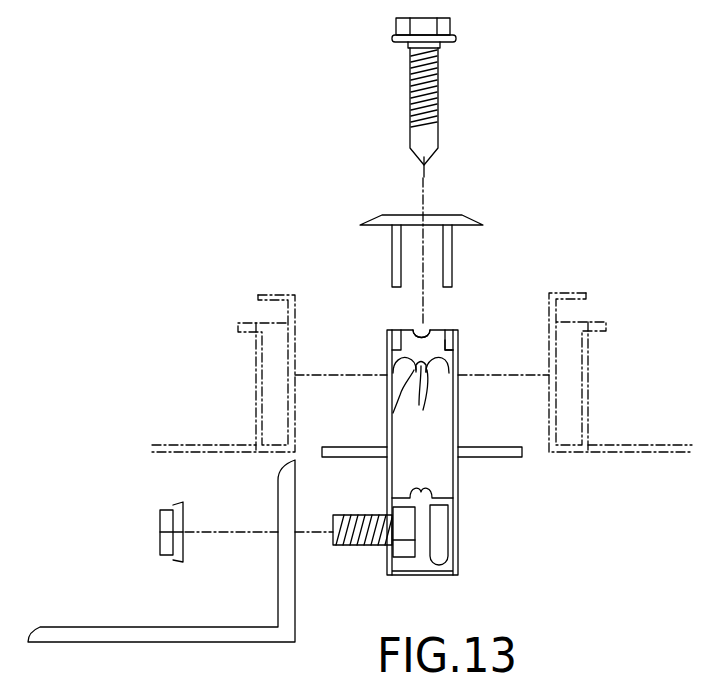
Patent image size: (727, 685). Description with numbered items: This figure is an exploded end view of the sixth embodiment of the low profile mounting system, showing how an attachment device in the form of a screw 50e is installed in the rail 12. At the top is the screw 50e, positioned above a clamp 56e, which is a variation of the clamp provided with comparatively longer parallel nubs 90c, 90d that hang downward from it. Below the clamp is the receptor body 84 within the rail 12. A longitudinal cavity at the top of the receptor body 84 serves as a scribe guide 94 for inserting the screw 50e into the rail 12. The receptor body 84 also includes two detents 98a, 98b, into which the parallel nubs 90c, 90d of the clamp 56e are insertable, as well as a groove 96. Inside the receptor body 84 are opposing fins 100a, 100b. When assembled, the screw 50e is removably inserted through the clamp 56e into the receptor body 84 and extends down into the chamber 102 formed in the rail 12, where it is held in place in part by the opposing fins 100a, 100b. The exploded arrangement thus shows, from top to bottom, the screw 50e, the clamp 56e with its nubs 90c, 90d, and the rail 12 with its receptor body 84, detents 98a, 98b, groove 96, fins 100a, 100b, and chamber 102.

The screw 50e is at (435, 85).
The clamp 56e is at (462, 214).
The parallel nub 90d is at (393, 247).
The parallel nub 90c is at (453, 248).
The scribe guide 94 is at (417, 330).
The receptor body 84 is at (441, 331).
The detent 98b is at (396, 331).
The detent 98a is at (436, 342).
The fin 100b is at (416, 366).
The fin 100a is at (428, 362).
The rail 12 is at (460, 407).
The groove 96 is at (410, 397).
The chamber 102 is at (435, 462).